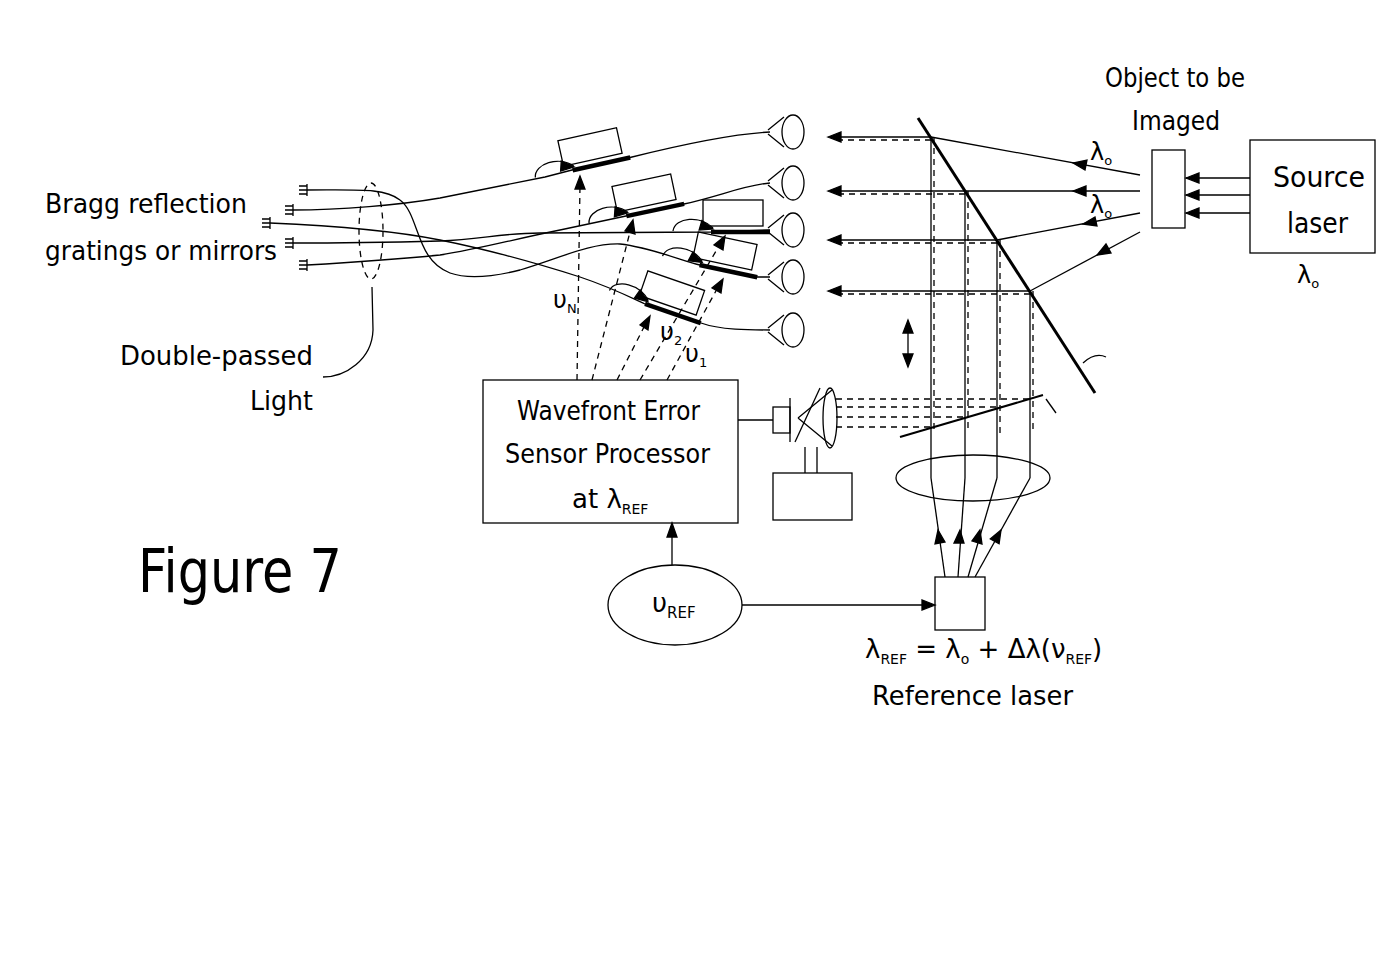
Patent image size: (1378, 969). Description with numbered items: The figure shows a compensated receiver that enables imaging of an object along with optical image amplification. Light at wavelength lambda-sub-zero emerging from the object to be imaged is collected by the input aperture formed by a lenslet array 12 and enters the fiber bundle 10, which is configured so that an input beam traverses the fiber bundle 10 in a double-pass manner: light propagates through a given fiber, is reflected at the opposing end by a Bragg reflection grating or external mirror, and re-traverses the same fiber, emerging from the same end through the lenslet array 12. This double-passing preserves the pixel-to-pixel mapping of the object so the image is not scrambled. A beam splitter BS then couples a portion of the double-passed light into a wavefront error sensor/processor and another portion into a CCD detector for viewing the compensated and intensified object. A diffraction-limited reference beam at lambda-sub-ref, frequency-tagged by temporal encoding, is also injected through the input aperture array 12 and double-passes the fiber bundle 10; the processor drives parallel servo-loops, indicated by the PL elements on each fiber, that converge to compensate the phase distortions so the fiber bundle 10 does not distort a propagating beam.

The fiber bundle 10 is at (421, 174).
The lenslet array 12 is at (786, 99).
The phase-locked loop / piezo phase modulator PL is at (649, 224).
The beam splitter BS is at (1022, 277).
The CCD detector CCD is at (812, 454).